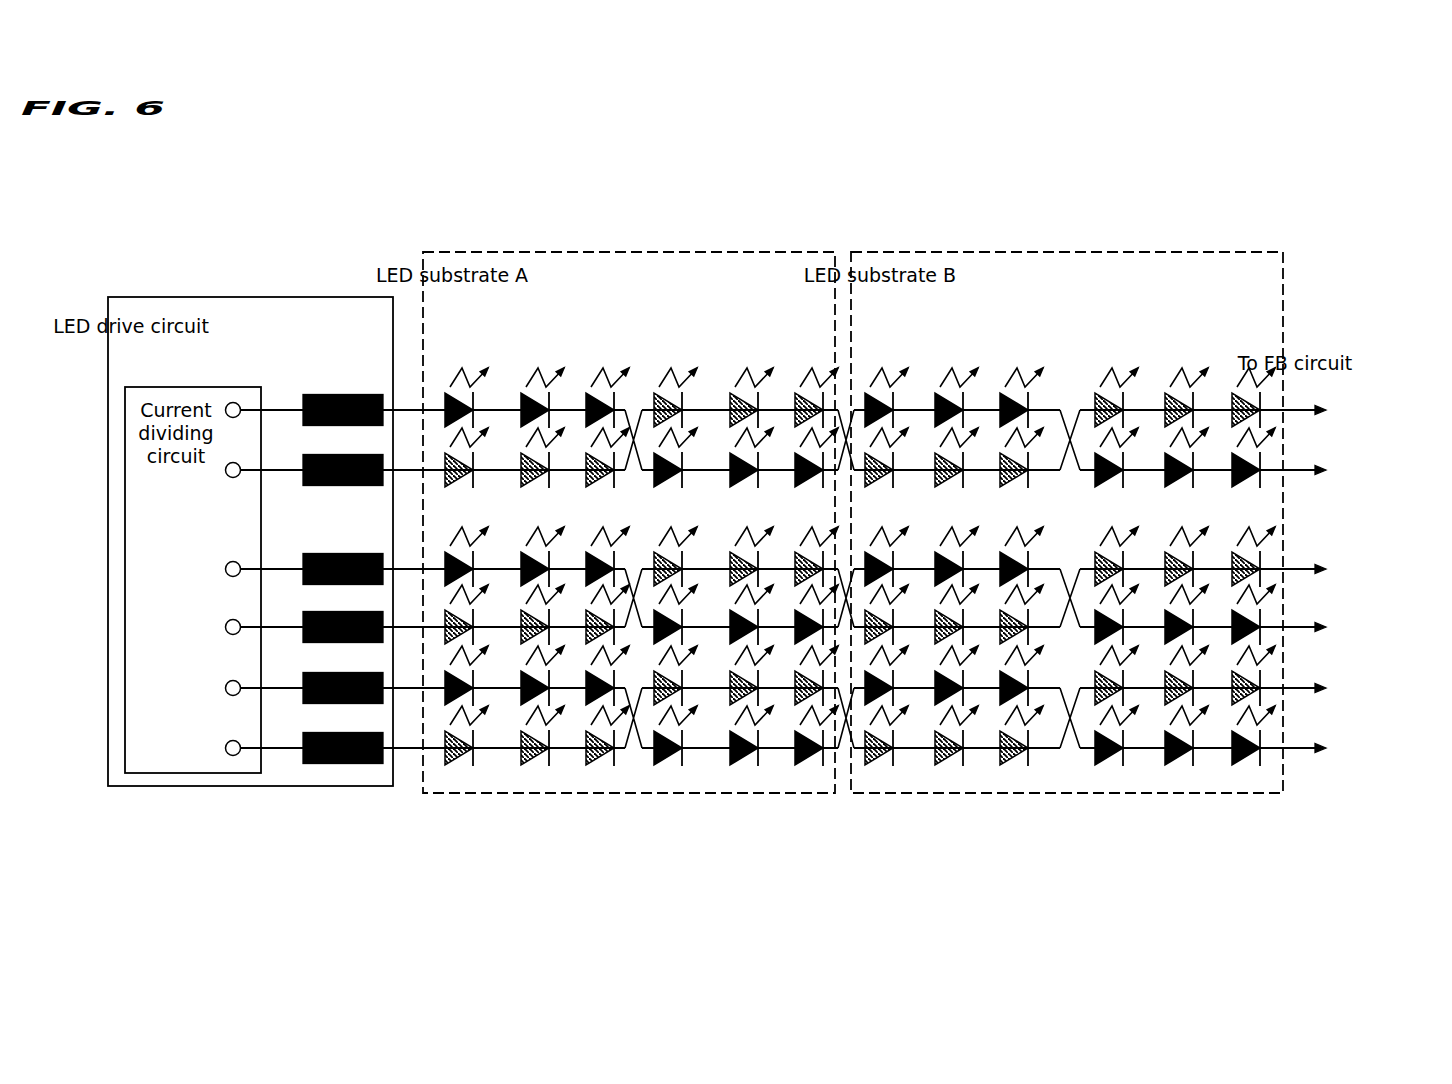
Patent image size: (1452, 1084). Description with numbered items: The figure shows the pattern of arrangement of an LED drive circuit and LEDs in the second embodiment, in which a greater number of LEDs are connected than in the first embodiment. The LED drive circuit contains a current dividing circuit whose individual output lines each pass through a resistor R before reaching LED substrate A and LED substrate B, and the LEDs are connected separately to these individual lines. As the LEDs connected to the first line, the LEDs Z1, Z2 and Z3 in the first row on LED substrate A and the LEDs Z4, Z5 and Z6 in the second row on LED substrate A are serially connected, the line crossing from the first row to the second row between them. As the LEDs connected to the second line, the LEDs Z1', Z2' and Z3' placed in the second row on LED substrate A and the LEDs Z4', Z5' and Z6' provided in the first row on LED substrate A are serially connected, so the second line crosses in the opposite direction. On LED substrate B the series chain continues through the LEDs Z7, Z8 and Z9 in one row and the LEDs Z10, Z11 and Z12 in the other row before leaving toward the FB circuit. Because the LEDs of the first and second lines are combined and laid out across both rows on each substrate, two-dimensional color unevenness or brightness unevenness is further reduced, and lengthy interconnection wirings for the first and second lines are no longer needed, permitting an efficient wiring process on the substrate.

The resistor R is at (343, 563).
The LED Z1 is at (466, 377).
The LED Z2 is at (542, 377).
The LED Z3 is at (607, 377).
The LED Z4 is at (675, 542).
The LED Z5 is at (751, 542).
The LED Z6 is at (816, 542).
The light emitting diode Z7 is at (886, 377).
The light emitting diode Z8 is at (956, 377).
The light emitting diode Z9 is at (1021, 377).
The light emitting diode Z10 is at (1115, 542).
The light emitting diode Z11 is at (1186, 542).
The light emitting diode Z12 is at (1253, 542).
The LED Z1' is at (466, 542).
The LED Z2' is at (542, 542).
The LED Z3' is at (607, 542).
The LED Z4' is at (677, 377).
The LED Z5' is at (751, 377).
The LED Z6' is at (816, 377).